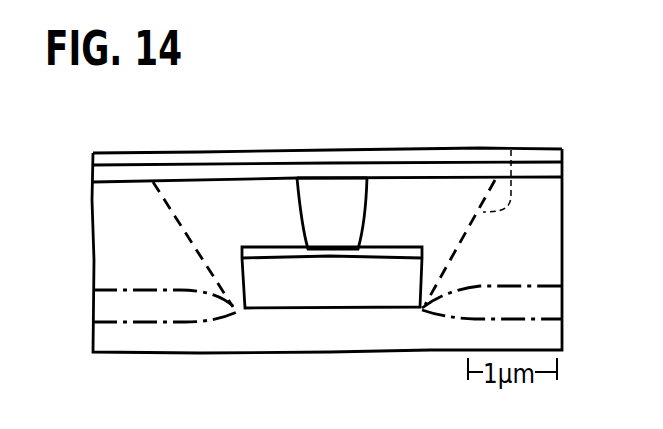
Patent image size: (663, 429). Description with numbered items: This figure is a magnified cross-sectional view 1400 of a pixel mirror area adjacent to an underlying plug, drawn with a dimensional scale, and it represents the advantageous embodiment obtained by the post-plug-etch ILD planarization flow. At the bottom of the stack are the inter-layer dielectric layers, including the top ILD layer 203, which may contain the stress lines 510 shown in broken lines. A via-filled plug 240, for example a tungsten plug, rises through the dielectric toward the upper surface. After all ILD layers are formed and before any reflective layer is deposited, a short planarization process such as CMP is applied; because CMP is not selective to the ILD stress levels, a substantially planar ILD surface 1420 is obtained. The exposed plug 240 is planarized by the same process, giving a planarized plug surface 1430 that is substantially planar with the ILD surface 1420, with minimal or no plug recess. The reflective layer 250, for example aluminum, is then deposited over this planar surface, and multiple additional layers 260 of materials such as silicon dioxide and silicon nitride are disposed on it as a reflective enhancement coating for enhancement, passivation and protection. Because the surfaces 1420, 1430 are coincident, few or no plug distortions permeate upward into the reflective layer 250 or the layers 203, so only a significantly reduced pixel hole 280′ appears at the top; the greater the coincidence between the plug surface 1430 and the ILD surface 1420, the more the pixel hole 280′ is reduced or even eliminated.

The example view 1400 is at (383, 114).
The additional layers 260 is at (128, 157).
The planar ILD surface 1420 is at (190, 173).
The reflective layer 250 is at (445, 172).
The planarized plug surface 1430 is at (310, 180).
The reduced pixel hole 280′ is at (330, 151).
The via-filled plug 240 is at (360, 212).
The top ILD layer 203 is at (228, 203).
The stress lines 510 is at (511, 150).